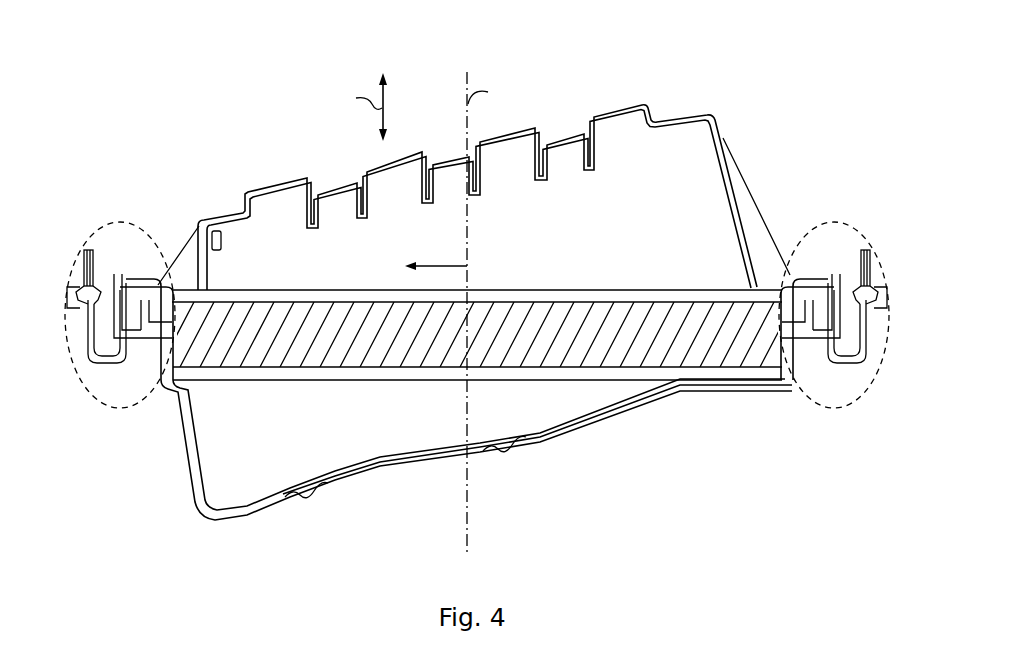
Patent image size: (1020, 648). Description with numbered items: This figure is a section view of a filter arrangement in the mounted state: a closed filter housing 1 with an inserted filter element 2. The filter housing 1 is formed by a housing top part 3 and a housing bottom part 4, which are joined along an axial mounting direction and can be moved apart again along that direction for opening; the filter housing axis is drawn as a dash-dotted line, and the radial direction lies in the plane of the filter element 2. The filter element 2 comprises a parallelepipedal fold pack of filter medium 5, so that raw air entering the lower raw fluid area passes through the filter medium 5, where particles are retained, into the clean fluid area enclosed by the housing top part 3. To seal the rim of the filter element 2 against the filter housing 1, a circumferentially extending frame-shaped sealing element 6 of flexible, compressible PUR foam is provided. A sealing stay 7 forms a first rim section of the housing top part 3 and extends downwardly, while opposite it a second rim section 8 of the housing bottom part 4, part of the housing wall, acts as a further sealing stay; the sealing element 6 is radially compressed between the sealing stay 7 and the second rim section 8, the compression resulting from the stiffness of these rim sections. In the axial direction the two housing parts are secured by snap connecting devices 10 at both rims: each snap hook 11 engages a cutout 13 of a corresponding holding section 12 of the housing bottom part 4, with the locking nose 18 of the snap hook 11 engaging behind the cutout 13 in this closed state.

The filter housing 1 is at (244, 84).
The filter element 2 is at (324, 371).
The housing top part 3 is at (727, 140).
The housing bottom part 4 is at (538, 443).
The filter medium 5 is at (398, 313).
The sealing element 6 is at (148, 312).
The sealing stay 7 is at (102, 315).
The second rim section 8 is at (181, 331).
The snap connecting device 10 is at (120, 222).
The snap hook 11 is at (91, 345).
The holding section 12 is at (85, 262).
The cutout 13 is at (67, 297).
The locking nose 18 is at (97, 296).